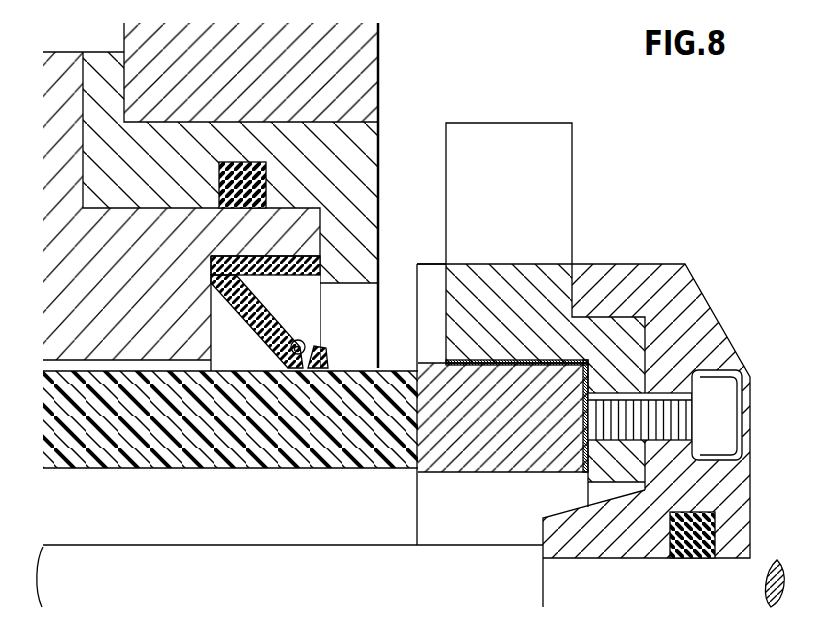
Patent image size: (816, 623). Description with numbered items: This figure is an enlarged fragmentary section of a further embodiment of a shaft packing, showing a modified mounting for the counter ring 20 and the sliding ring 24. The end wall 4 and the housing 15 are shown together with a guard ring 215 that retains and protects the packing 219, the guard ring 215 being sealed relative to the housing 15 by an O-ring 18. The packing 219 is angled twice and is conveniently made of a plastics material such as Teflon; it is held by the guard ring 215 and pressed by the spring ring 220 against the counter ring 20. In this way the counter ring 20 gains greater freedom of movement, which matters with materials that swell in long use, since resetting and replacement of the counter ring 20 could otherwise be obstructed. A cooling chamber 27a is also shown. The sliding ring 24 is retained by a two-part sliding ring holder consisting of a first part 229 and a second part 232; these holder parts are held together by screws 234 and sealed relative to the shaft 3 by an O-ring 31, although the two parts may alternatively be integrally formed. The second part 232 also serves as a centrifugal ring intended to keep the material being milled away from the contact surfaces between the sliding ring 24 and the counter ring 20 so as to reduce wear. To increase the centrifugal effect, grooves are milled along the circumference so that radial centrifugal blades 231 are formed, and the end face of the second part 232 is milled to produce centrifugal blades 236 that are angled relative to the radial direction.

The shaft 3 is at (77, 557).
The end wall 4 is at (350, 47).
The housing 15 is at (132, 322).
The O-ring 18 is at (266, 178).
The counter ring 20 is at (252, 413).
The sliding ring 24 is at (503, 432).
The cooling chamber 27a is at (292, 518).
The O-ring 31 is at (677, 556).
The guard ring 215 is at (343, 148).
The packing 219 is at (322, 268).
The spring ring 220 is at (300, 340).
The sliding ring holder first part 229 is at (682, 288).
The radial centrifugal blades 231 is at (507, 135).
The sliding ring holder second part 232 is at (537, 290).
The screws 234 is at (727, 397).
The centrifugal blades 236 is at (430, 298).